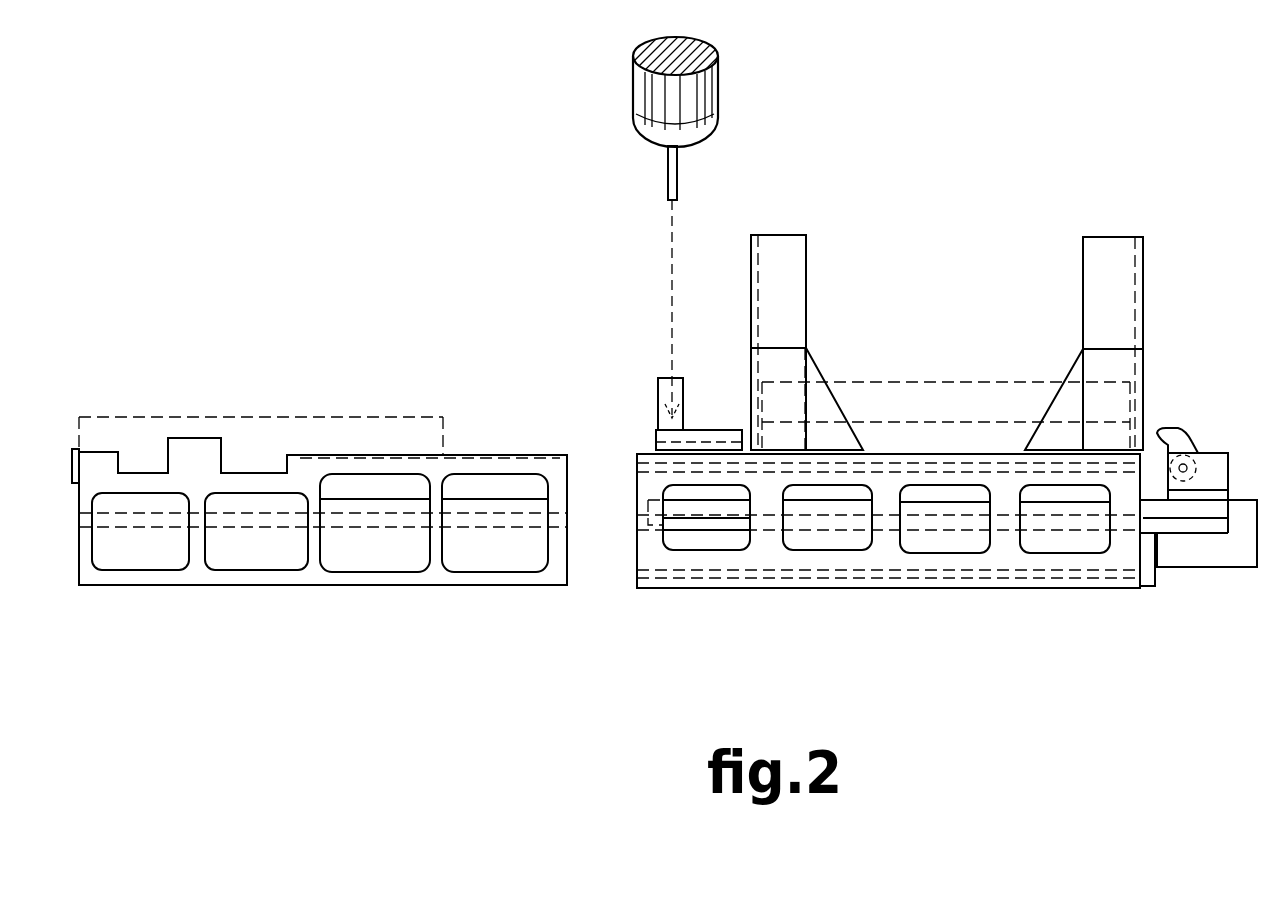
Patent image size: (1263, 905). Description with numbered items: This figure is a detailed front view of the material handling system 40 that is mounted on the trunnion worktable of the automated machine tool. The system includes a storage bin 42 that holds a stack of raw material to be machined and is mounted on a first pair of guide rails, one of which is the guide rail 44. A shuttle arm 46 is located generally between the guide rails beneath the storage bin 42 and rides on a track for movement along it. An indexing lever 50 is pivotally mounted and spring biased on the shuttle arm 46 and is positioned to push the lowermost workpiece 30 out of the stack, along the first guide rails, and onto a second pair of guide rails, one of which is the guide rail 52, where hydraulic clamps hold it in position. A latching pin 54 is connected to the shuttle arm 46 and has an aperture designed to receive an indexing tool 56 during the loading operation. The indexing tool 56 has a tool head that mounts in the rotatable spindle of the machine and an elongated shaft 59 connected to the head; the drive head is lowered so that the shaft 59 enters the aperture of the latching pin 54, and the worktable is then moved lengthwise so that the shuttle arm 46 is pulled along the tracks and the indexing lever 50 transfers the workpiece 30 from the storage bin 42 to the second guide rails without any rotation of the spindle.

The workpiece 30 is at (925, 382).
The material handling system 40 is at (664, 458).
The storage bin 42 is at (1143, 255).
The guide rail 44 is at (677, 583).
The shuttle arm 46 is at (1196, 540).
The indexing lever 50 is at (1178, 430).
The guide rail 52 is at (561, 455).
The latching pin 54 is at (658, 379).
The indexing tool 56 is at (632, 91).
The elongated shaft 59 is at (668, 190).